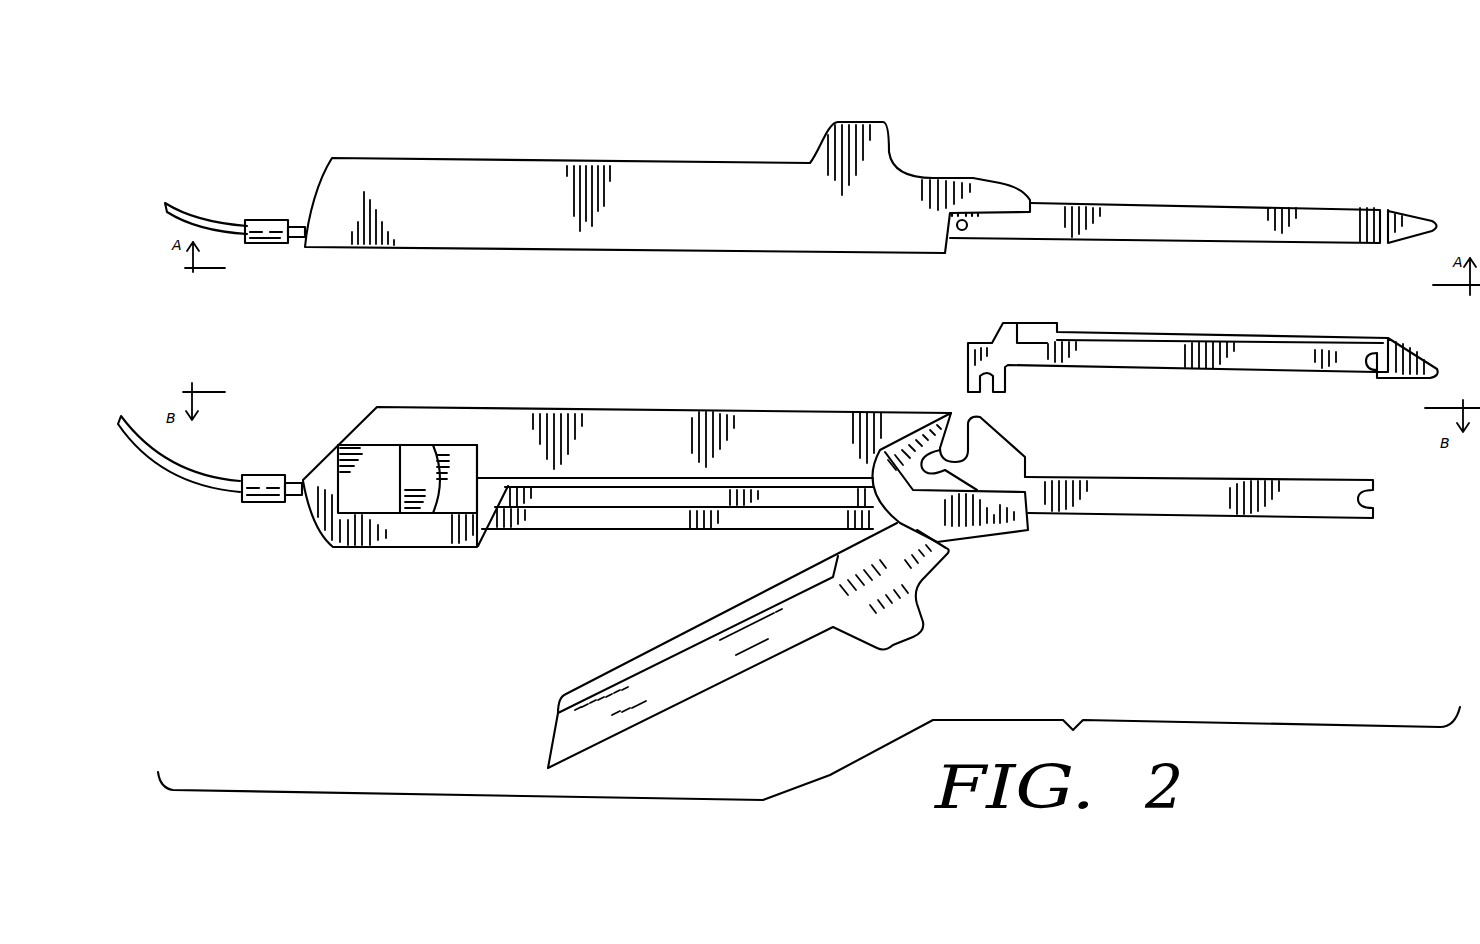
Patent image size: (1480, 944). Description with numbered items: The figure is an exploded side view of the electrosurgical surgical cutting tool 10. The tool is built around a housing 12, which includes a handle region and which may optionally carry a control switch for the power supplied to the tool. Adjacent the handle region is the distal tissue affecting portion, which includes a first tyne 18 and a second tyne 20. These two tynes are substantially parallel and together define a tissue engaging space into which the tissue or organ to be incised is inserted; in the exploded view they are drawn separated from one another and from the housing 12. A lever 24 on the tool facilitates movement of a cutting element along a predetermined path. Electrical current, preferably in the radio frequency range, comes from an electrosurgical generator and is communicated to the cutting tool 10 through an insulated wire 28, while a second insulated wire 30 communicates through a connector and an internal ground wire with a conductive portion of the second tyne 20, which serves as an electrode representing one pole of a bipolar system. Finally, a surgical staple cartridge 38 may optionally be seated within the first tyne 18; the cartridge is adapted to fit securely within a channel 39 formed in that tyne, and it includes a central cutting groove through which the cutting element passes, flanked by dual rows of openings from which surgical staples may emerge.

The surgical cutting tool 10 is at (472, 133).
The housing 12 is at (634, 160).
The second tyne 20 is at (1163, 217).
The insulated wire 30 is at (187, 208).
The surgical staple cartridge 38 is at (1138, 353).
The insulated wire 28 is at (185, 477).
The lever 24 is at (410, 497).
The channel 39 is at (1240, 478).
The first tyne 18 is at (1203, 497).